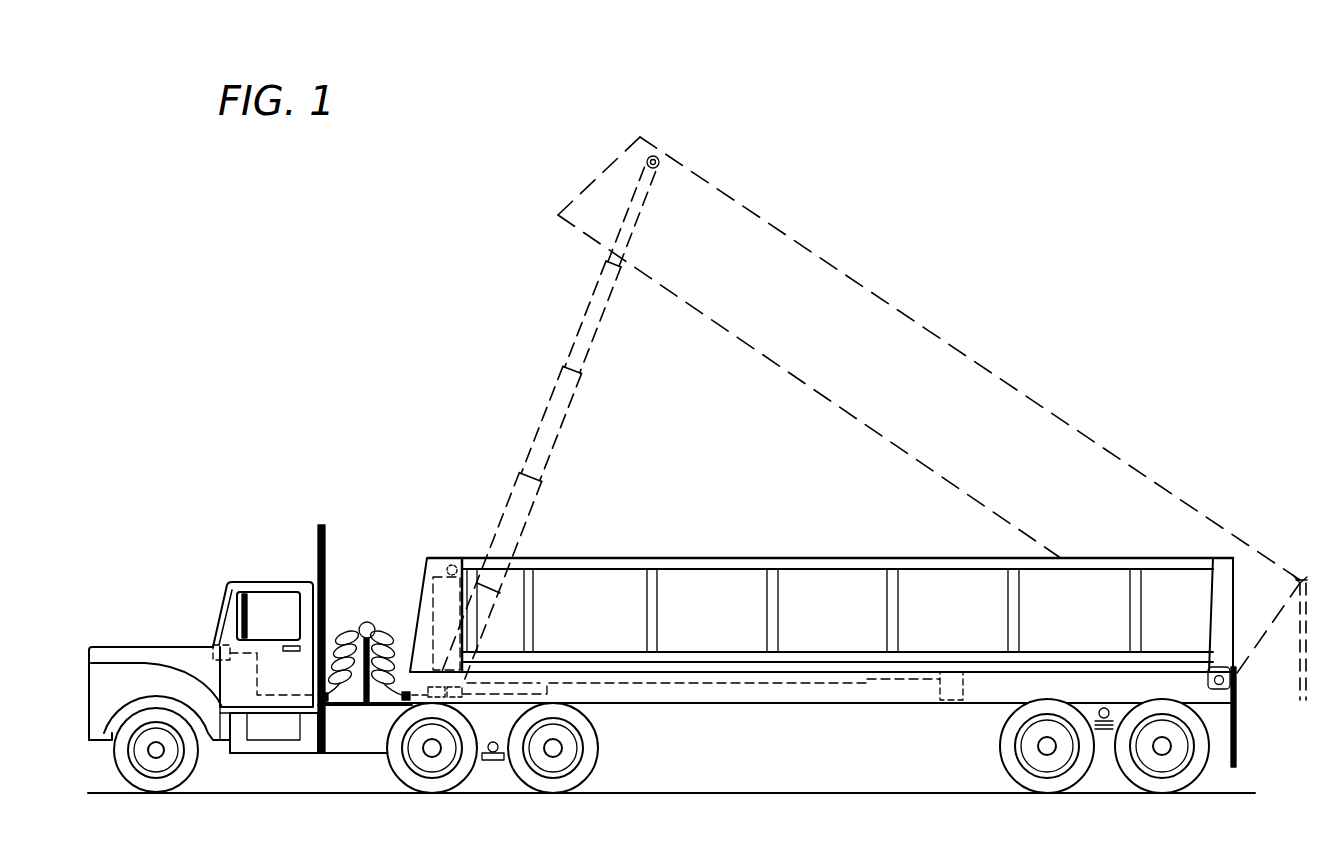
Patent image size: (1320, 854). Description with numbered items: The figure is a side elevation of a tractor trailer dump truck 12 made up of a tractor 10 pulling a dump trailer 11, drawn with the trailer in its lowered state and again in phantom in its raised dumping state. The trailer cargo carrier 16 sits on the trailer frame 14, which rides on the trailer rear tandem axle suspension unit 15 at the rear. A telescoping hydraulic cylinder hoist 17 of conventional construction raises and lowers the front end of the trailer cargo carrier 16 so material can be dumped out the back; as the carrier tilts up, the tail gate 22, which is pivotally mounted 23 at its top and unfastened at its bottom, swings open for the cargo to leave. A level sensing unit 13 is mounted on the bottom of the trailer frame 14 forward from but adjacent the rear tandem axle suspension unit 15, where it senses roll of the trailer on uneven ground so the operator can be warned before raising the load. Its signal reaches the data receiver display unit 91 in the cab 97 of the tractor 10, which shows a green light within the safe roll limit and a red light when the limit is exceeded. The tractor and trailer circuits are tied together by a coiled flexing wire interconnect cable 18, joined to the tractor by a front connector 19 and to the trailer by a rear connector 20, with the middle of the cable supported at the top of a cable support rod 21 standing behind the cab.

The tractor 10 is at (148, 647).
The trailer 11 is at (921, 590).
The dump truck 12 is at (414, 398).
The level sensing unit 13 is at (952, 702).
The trailer frame 14 is at (808, 705).
The trailer rear tandem axle suspension unit 15 is at (1002, 745).
The trailer cargo carrier 16 is at (835, 262).
The telescoping hydraulic cylinder hoist 17 is at (535, 497).
The wire interconnect cable 18 is at (340, 640).
The front connector 19 is at (322, 703).
The rear connector 20 is at (405, 700).
The cable support rod 21 is at (380, 638).
The tail gate 22 is at (1297, 680).
The pivotal mounting 23 is at (1290, 570).
The data receiver display unit 91 is at (203, 661).
The cab 97 is at (259, 582).